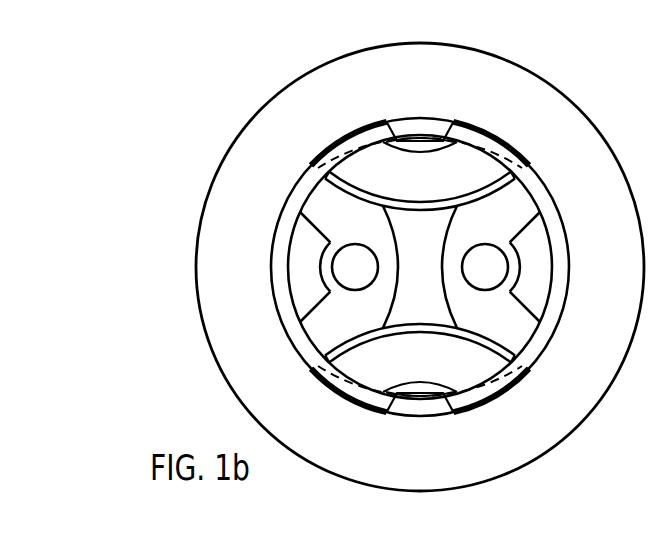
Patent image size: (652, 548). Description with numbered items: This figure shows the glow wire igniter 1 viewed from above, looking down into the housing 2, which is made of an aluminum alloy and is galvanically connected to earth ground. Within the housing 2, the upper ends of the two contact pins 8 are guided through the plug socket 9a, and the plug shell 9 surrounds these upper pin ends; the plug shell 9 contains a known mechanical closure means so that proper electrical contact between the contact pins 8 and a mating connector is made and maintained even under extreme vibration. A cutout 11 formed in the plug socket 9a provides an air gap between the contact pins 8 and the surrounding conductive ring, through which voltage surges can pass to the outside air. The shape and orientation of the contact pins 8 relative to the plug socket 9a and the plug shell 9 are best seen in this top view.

The glow wire igniter 1 is at (557, 70).
The housing 2 is at (222, 146).
The contact pins 8 is at (360, 269).
The plug shell 9 is at (339, 155).
The plug socket 9a is at (423, 236).
The cutout 11 is at (537, 272).